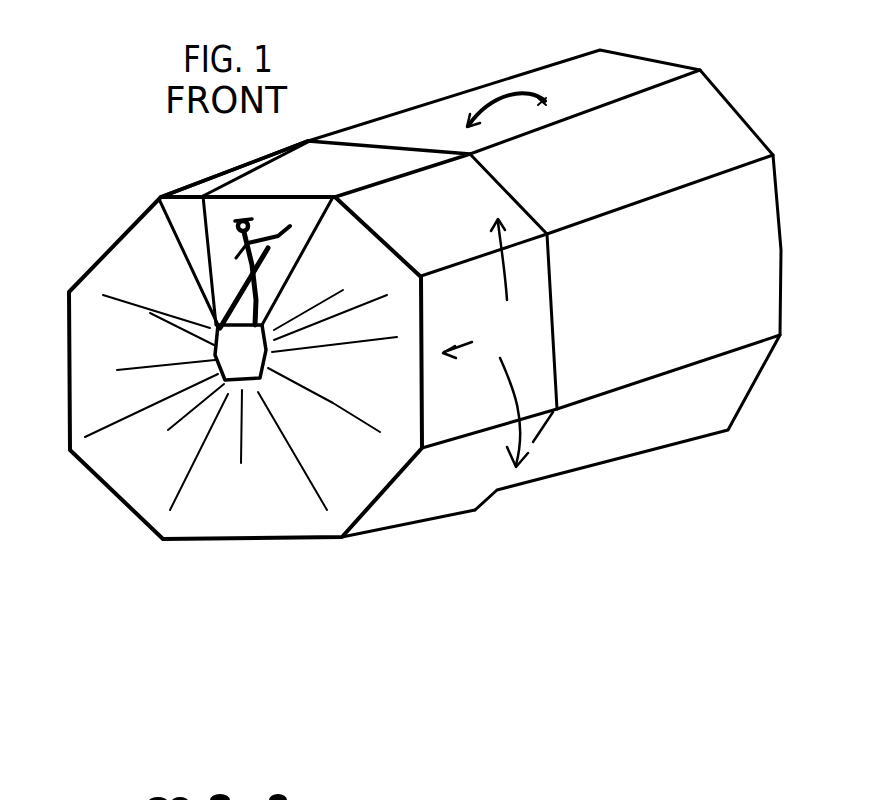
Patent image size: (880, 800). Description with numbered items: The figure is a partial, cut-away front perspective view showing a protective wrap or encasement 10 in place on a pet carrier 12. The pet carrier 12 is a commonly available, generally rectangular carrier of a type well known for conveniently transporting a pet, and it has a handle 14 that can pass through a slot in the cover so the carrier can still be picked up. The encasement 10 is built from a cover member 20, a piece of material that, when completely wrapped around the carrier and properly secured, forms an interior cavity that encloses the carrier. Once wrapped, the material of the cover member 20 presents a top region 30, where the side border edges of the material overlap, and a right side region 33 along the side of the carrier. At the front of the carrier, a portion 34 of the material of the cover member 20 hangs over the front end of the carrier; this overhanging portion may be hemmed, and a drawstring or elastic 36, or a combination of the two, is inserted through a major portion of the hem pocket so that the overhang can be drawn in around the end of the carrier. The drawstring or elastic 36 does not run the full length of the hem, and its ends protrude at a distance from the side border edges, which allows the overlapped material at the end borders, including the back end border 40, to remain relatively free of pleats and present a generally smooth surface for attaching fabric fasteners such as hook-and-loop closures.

The protective wrap or encasement 10 is at (323, 135).
The pet carrier 12 is at (493, 78).
The handle 14 is at (542, 102).
The cover member 20 is at (436, 534).
The top region 30 is at (359, 339).
The right side region 33 is at (485, 343).
The portion hanging over the front end 34 is at (245, 368).
The drawstring, elastic 36 is at (256, 248).
The back end border 40 is at (260, 261).